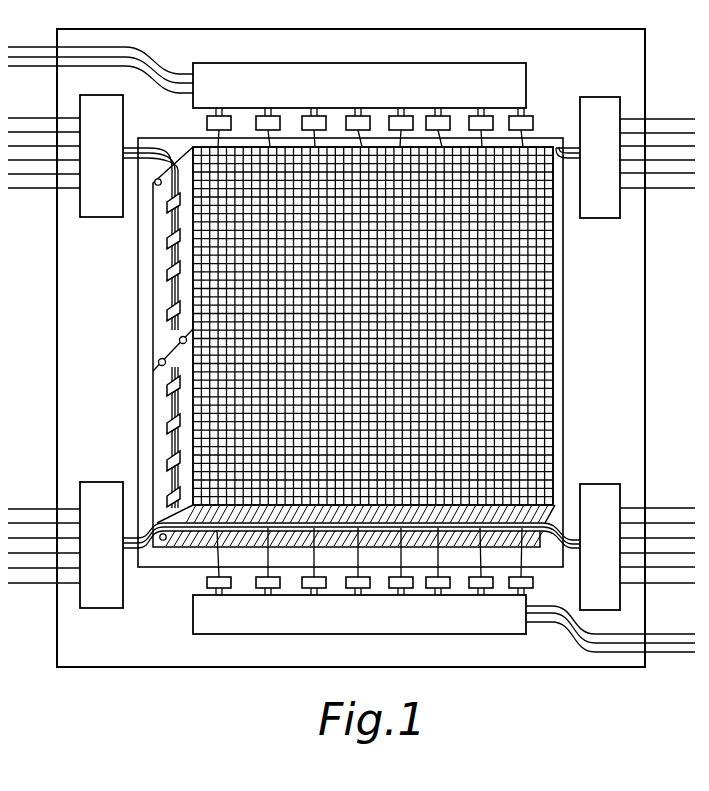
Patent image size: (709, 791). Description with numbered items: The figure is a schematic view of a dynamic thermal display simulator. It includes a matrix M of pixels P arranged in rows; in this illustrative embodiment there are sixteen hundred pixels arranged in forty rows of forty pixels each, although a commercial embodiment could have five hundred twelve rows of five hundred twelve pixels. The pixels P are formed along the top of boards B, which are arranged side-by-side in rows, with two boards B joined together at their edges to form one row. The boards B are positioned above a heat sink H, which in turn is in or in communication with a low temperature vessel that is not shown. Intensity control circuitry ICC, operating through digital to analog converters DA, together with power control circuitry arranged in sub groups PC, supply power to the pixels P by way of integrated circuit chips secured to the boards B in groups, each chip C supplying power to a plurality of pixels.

The matrix M is at (598, 278).
The heat sink H is at (137, 322).
The power control circuitry PC is at (117, 165).
The intensity control circuitry ICC is at (398, 96).
The digital to analog converters DA is at (472, 117).
The pixels P is at (513, 420).
The boards B is at (165, 263).
The chip C is at (171, 204).